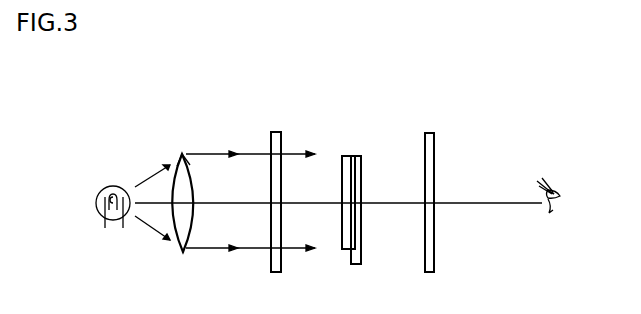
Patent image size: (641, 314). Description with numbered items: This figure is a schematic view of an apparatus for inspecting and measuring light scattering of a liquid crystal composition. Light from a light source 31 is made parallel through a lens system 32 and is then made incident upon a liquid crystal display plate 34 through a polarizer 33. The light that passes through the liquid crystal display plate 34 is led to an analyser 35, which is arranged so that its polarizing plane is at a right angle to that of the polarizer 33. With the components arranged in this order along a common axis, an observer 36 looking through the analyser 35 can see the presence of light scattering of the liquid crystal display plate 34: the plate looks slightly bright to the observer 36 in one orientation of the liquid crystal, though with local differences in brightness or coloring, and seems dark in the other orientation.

The light source 31 is at (113, 187).
The lens system 32 is at (190, 160).
The polarizer 33 is at (277, 131).
The liquid crystal display plate 34 is at (355, 156).
The analyser 35 is at (433, 148).
The observer 36 is at (556, 191).